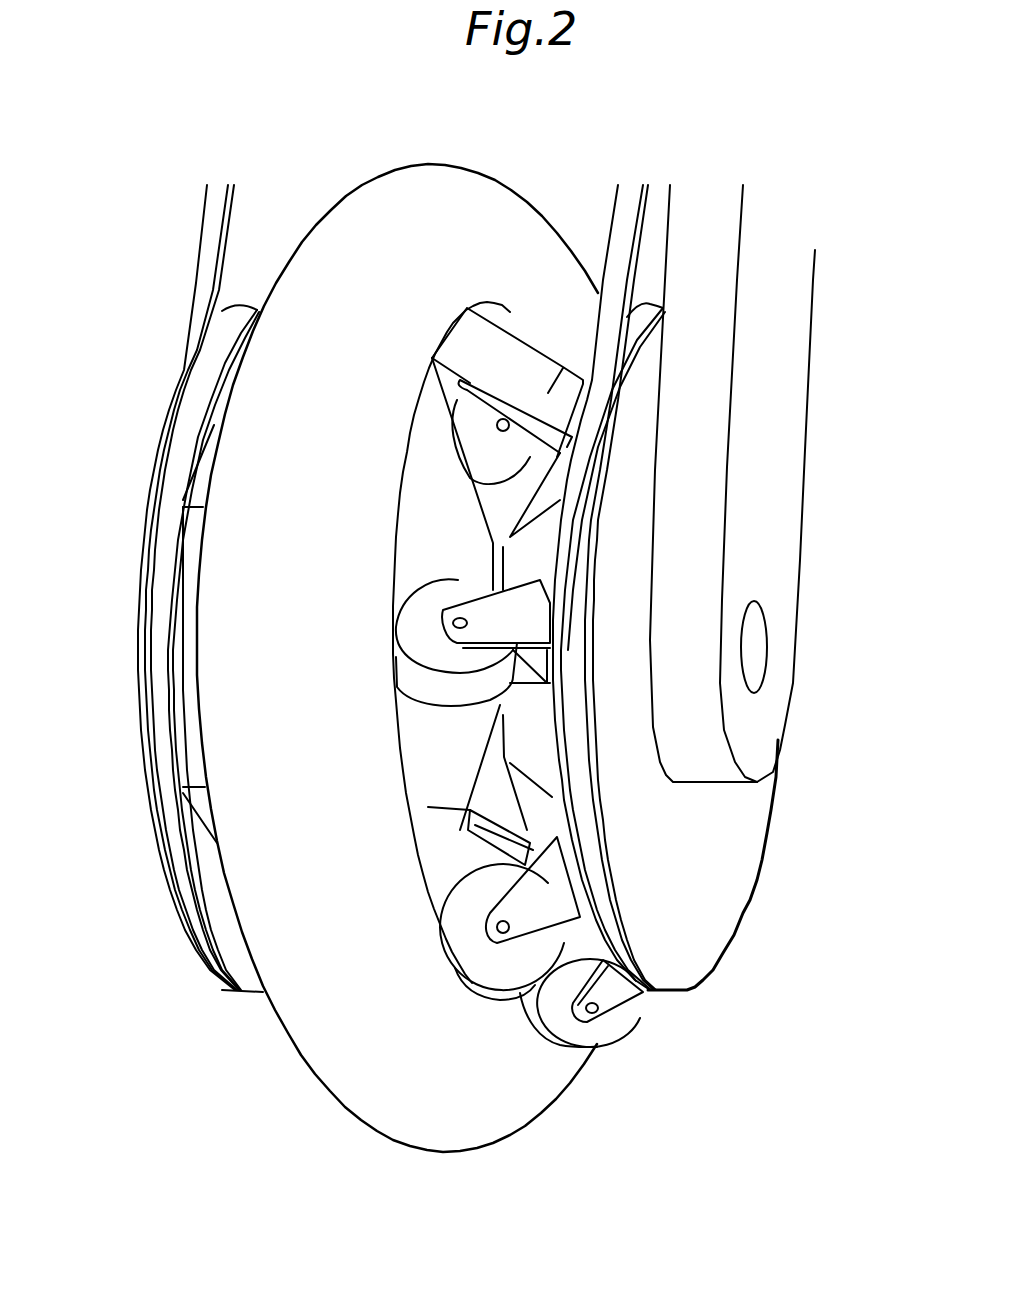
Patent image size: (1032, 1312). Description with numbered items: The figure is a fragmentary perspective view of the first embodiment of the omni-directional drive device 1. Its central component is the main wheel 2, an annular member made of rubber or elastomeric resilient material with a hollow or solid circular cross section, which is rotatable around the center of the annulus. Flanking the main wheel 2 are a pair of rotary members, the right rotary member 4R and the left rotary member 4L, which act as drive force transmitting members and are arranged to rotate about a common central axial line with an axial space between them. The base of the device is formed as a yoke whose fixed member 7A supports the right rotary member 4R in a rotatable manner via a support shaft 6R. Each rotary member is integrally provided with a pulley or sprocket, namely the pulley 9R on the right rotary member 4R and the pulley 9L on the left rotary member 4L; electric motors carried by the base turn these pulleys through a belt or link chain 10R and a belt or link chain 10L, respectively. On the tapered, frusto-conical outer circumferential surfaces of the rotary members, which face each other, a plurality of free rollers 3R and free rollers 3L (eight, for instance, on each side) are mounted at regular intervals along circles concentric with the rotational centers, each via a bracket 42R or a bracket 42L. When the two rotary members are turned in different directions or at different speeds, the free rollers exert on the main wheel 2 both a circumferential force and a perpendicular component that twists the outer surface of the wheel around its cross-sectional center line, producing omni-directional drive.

The omni-directional drive device 1 is at (122, 348).
The main wheel 2 is at (503, 1128).
The free rollers 3R is at (460, 590).
The free rollers 3L is at (463, 843).
The left rotary member 4L is at (137, 653).
The right rotary member 4R is at (540, 757).
The support shaft 6R is at (757, 645).
The fixed member 7A is at (803, 332).
The pulley 9L is at (228, 995).
The pulley 9R is at (647, 307).
The belt 10L is at (167, 793).
The belt 10R is at (622, 200).
The bracket 42L is at (428, 807).
The bracket 42R is at (567, 880).